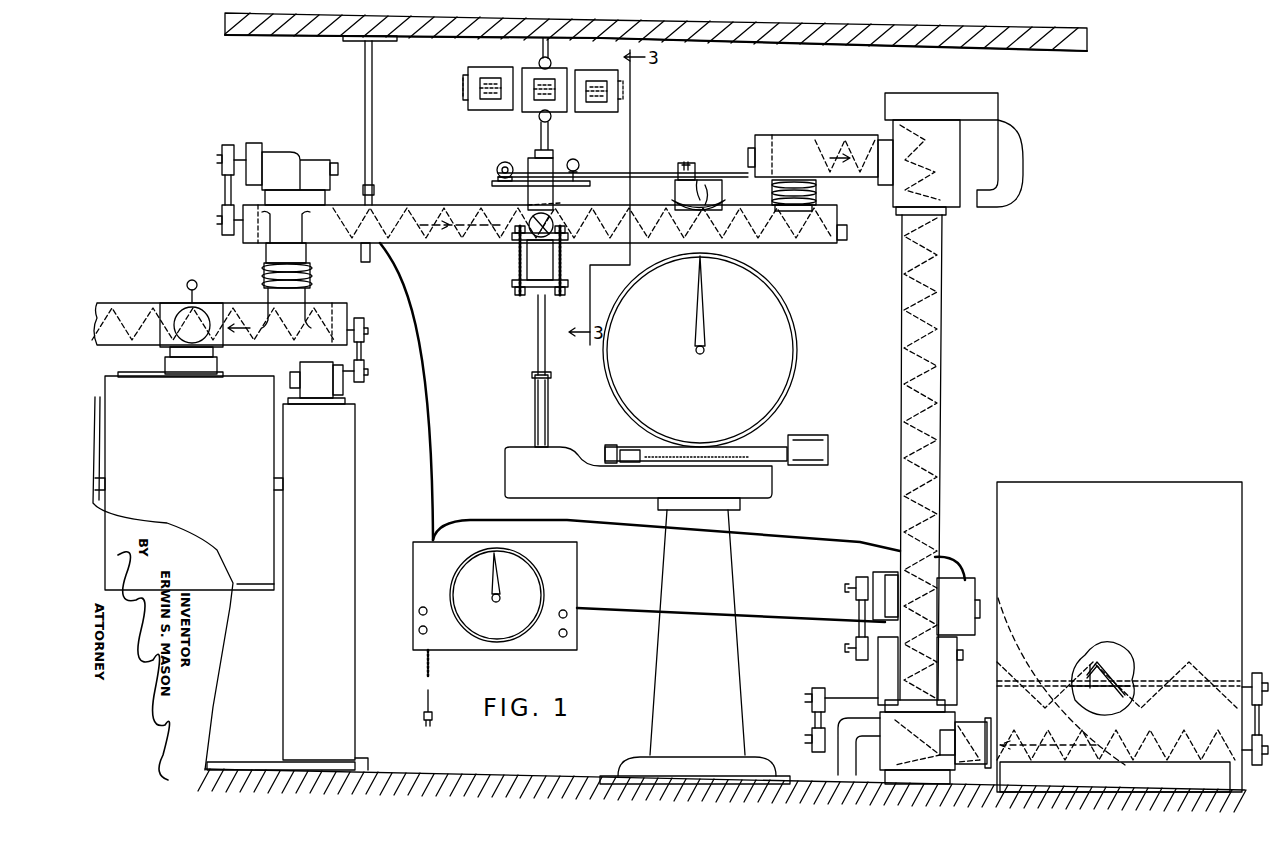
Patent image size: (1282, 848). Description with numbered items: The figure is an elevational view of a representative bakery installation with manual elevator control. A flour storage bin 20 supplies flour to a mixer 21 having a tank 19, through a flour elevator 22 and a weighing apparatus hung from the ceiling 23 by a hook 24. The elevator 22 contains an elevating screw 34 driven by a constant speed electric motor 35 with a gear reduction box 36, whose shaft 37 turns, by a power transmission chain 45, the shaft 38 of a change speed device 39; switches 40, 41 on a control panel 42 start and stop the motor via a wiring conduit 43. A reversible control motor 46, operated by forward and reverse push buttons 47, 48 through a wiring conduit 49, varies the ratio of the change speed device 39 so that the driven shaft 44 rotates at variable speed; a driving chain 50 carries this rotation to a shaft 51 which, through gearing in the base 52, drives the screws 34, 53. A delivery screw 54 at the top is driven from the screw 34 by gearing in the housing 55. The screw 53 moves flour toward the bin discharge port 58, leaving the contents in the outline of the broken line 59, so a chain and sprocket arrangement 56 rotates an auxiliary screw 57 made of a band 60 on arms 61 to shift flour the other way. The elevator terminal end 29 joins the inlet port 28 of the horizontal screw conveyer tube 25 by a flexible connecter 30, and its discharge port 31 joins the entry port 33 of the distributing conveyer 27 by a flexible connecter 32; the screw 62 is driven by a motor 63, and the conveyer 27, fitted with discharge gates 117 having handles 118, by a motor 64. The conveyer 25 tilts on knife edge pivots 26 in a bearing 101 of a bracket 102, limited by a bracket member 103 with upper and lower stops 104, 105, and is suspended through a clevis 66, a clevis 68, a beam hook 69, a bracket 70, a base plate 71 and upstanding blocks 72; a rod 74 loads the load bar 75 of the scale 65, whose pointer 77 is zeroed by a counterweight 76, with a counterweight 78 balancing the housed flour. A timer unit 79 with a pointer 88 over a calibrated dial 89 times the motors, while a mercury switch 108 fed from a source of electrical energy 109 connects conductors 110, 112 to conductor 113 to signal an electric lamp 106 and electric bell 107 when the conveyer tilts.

The tank 19 is at (262, 523).
The flour storage bin 20 is at (1180, 495).
The mixer 21 is at (345, 462).
The flour elevator 22 is at (941, 388).
The ceiling 23 is at (714, 40).
The hook 24 is at (541, 48).
The horizontal screw conveyer tube 25 is at (447, 246).
The knife edge pivots 26 is at (535, 215).
The distributing conveyer 27 is at (240, 304).
The inlet port 28 is at (812, 208).
The terminal end 29 is at (790, 140).
The flexible connecter 30 is at (816, 190).
The discharge port 31 is at (266, 253).
The flexible connecter 32 is at (266, 277).
The entry port 33 is at (305, 298).
The elevating screw 34 is at (941, 455).
The electric motor 35 is at (960, 590).
The gear reduction box 36 is at (885, 578).
The shaft 37 is at (843, 589).
The shaft 38 is at (843, 650).
The change speed device 39 is at (878, 673).
The electrical switch 40 is at (418, 611).
The electrical switch 41 is at (418, 630).
The control panel 42 is at (576, 597).
The wiring conduit 43 is at (626, 524).
The driven shaft 44 is at (838, 694).
The power transmission chain 45 is at (858, 612).
The reversible control motor 46 is at (960, 662).
The forward push button 47 is at (568, 614).
The reverse push button 48 is at (568, 633).
The wiring conduit 49 is at (772, 614).
The driving chain 50 is at (812, 720).
The shaft 51 is at (810, 740).
The base 52 is at (880, 770).
The screw 53 is at (1022, 765).
The delivery screw 54 is at (838, 140).
The housing 55 is at (930, 108).
The chain and sprocket arrangement 56 is at (1262, 722).
The auxiliary screw 57 is at (1090, 690).
The bin discharge port 58 is at (1000, 718).
The broken line 59 is at (1030, 650).
The band 60 is at (1108, 660).
The arms 61 is at (1085, 672).
The screw 62 is at (420, 206).
The motor 63 is at (290, 156).
The motor 64 is at (343, 392).
The scale 65 is at (797, 377).
The clevis 66 is at (553, 63).
The clevis 68 is at (553, 118).
The beam hook 69 is at (550, 140).
The bracket 70 is at (553, 197).
The base plate 71 is at (529, 296).
The upstanding blocks 72 is at (527, 263).
The rod 74 is at (546, 347).
The load bar 75 is at (548, 407).
The counterweight 76 is at (830, 438).
The pointer 77 is at (706, 298).
The counterweight 78 is at (628, 448).
The timer unit 79 is at (540, 588).
The pointer 88 is at (500, 576).
The calibrated dial 89 is at (530, 560).
The bearing 101 is at (562, 203).
The bracket 102 is at (492, 184).
The bracket member 103 is at (373, 135).
The upper stop 104 is at (374, 186).
The lower stop 105 is at (366, 264).
The electric lamp 106 is at (497, 170).
The electric bell 107 is at (580, 163).
The mercury switch 108 is at (720, 200).
The source of electrical energy 109 is at (690, 162).
The conductor 110 is at (675, 187).
The conductor 112 is at (710, 192).
The conductor 113 is at (700, 190).
The discharge gate 117 is at (175, 300).
The handle 118 is at (197, 283).